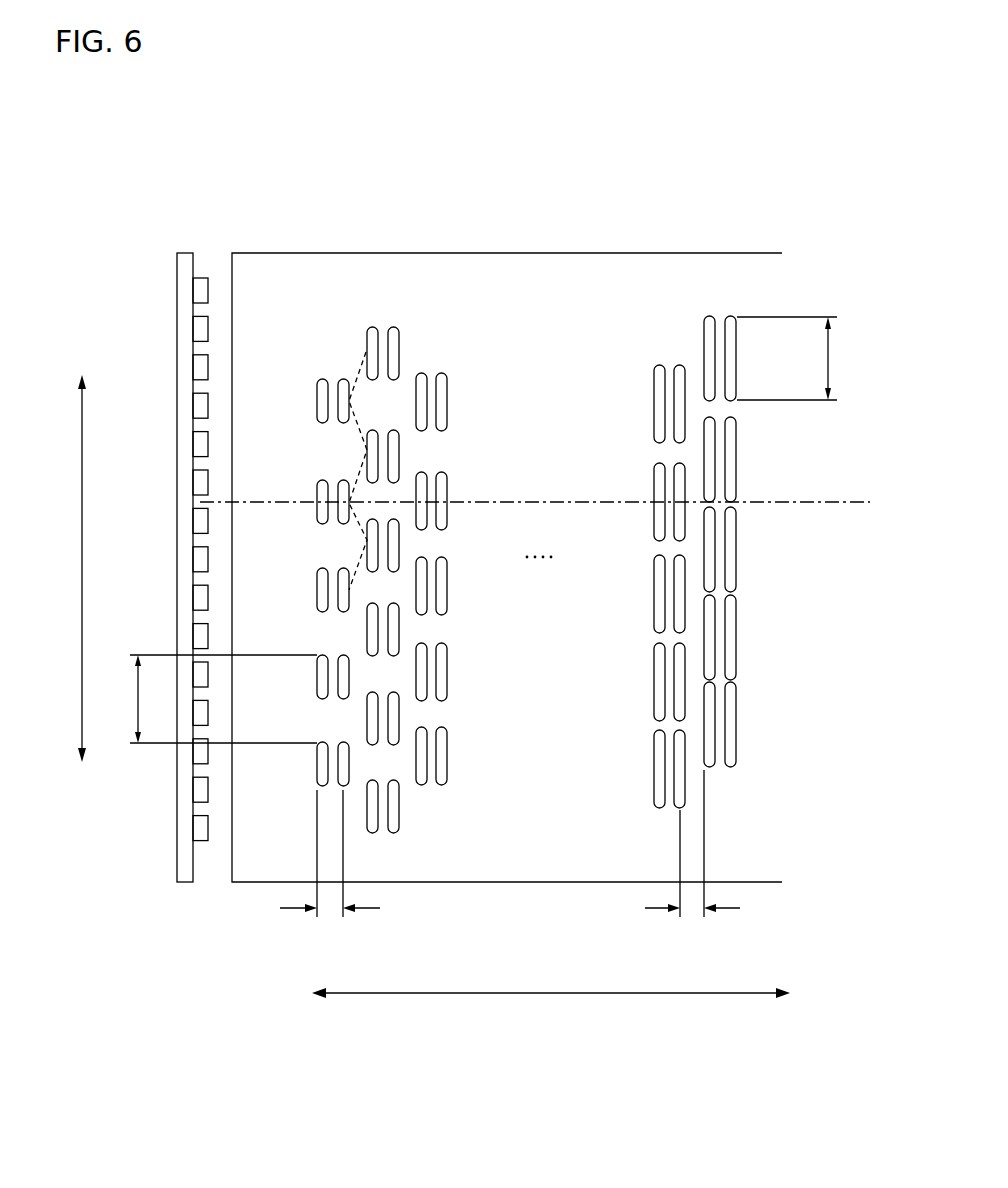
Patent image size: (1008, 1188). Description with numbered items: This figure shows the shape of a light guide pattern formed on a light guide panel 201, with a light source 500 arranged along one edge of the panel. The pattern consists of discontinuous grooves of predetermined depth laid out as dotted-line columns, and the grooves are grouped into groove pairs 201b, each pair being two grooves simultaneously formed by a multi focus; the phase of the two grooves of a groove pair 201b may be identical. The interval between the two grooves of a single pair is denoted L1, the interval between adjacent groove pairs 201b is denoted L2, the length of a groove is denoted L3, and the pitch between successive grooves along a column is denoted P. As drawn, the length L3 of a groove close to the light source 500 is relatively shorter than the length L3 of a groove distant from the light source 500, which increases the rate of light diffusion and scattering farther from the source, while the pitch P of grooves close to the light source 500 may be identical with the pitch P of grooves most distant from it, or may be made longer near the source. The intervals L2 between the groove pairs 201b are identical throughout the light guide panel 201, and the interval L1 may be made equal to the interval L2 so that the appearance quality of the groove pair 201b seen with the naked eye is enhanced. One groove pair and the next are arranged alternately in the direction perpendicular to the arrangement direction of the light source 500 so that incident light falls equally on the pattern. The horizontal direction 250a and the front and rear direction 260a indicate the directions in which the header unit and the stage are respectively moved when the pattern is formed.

The light source 500 is at (183, 253).
The light guide panel 201 is at (513, 280).
The groove pair 201b is at (393, 328).
The horizontal direction 250a is at (44, 568).
The front and rear direction 260a is at (551, 1012).
The pitch between grooves P is at (216, 699).
The interval between grooves of a groove pair L1 is at (330, 871).
The interval between groove pairs L2 is at (692, 861).
The length of a groove L3 is at (802, 358).